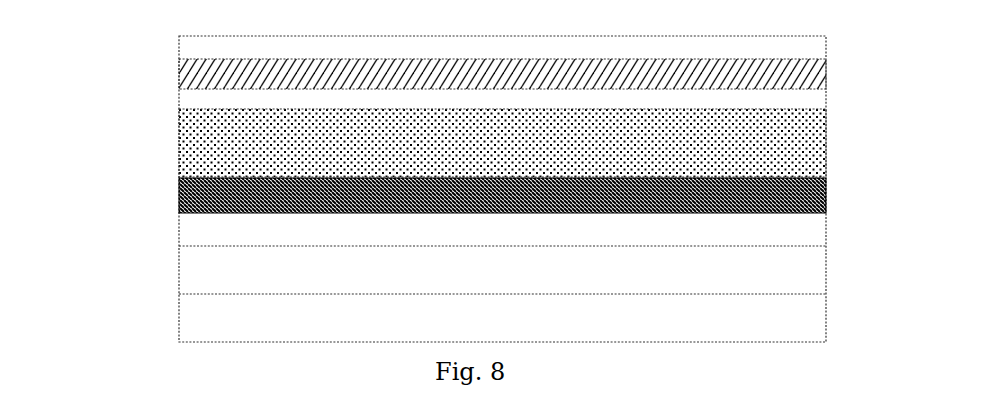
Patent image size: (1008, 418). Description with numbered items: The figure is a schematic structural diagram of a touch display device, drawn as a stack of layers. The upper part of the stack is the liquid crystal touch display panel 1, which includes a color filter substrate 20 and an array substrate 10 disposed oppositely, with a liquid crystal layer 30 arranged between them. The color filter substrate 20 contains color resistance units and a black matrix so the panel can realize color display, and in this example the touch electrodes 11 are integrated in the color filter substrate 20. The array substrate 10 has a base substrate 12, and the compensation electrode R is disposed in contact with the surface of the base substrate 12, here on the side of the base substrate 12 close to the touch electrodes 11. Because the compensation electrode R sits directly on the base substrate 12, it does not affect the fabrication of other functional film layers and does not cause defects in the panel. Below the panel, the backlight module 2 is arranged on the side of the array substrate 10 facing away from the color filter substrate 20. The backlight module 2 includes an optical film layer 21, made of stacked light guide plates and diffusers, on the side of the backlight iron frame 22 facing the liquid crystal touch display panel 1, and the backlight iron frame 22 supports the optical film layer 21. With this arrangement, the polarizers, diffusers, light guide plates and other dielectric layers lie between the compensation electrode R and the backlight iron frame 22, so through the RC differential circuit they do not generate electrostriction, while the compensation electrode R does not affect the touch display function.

The liquid crystal touch display panel 1 is at (423, 141).
The backlight module 2 is at (444, 294).
The array substrate 10 is at (179, 213).
The touch electrodes 11 is at (810, 75).
The base substrate 12 is at (802, 228).
The color filter substrate 20 is at (179, 71).
The optical film layer 21 is at (217, 270).
The backlight iron frame 22 is at (217, 317).
The liquid crystal layer 30 is at (179, 140).
The compensation electrode R is at (810, 195).